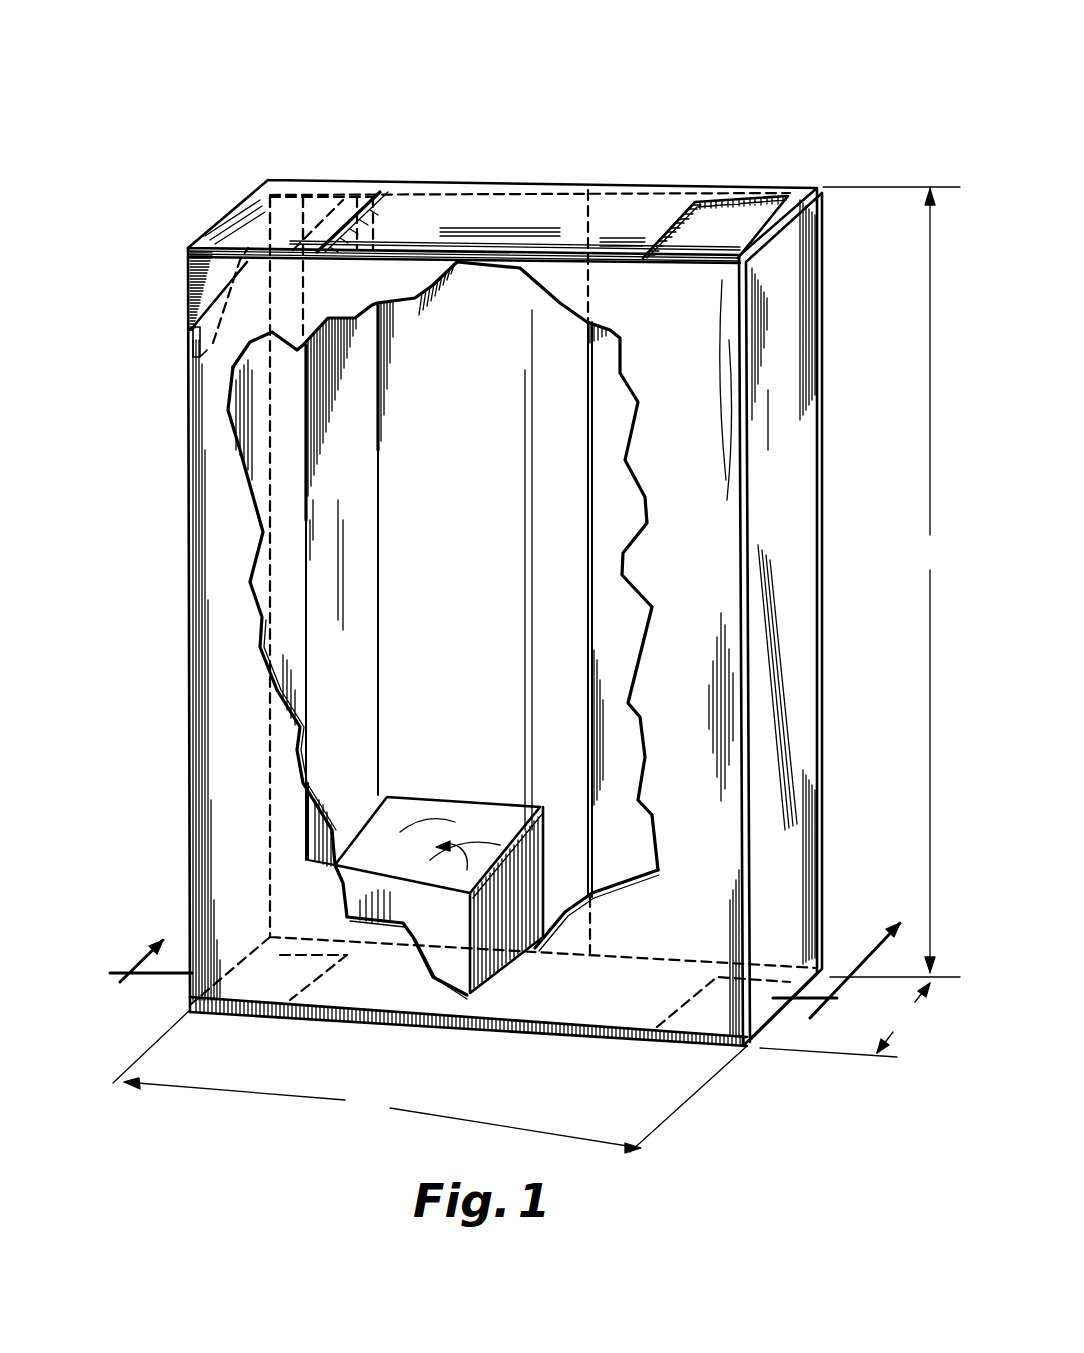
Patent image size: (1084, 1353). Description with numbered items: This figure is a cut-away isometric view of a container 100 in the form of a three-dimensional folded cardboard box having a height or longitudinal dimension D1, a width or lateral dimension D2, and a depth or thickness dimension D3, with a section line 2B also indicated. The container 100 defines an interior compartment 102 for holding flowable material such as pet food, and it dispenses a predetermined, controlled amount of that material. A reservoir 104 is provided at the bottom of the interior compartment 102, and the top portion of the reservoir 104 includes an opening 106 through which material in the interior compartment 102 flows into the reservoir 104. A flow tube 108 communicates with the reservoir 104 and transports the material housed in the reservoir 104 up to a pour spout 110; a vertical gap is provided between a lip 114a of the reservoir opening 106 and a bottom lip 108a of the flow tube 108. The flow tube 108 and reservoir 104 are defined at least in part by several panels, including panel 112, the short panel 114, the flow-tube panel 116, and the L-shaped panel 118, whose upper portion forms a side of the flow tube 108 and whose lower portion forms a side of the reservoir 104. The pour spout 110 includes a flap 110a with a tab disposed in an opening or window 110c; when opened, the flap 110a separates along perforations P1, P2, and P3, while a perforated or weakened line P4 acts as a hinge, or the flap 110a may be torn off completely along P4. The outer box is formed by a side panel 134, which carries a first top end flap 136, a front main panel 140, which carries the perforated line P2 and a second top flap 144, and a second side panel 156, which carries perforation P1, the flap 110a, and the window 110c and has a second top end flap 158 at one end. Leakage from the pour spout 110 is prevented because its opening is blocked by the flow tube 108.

The container 100 is at (666, 113).
The interior compartment 102 is at (592, 893).
The reservoir 104 is at (610, 826).
The opening 106 is at (510, 905).
The flow tube 108 is at (333, 467).
The bottom lip 108a is at (397, 800).
The pour spout 110 is at (214, 223).
The flap 110a is at (208, 285).
The opening or window 110c is at (193, 342).
The panel 112 is at (462, 488).
The short panel 114 is at (542, 881).
The lip 114a is at (500, 850).
The flow-tube panel 116 is at (323, 627).
The L-shaped panel 118 is at (408, 897).
The side panel 134 is at (800, 542).
The first top end flap 136 is at (732, 230).
The front main panel 140 is at (685, 377).
The second top flap 144 is at (452, 226).
The second side panel 156 is at (190, 620).
The second top end flap 158 is at (290, 213).
The perforation P1 is at (252, 221).
The perforated line P2 is at (213, 343).
The perforation P3 is at (300, 200).
The perforated or weakened line P4 is at (357, 218).
The height or longitudinal dimension D1 is at (891, 582).
The width or lateral dimension D2 is at (430, 1081).
The depth or thickness dimension D3 is at (845, 1020).
The section line 2B is at (508, 951).